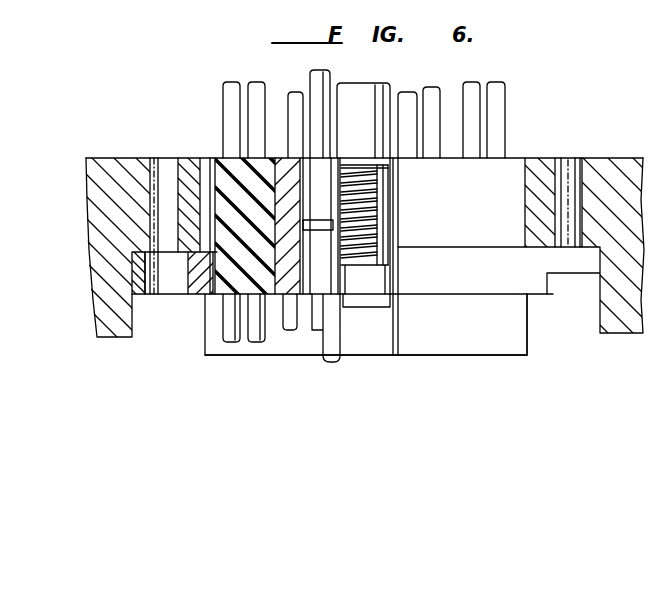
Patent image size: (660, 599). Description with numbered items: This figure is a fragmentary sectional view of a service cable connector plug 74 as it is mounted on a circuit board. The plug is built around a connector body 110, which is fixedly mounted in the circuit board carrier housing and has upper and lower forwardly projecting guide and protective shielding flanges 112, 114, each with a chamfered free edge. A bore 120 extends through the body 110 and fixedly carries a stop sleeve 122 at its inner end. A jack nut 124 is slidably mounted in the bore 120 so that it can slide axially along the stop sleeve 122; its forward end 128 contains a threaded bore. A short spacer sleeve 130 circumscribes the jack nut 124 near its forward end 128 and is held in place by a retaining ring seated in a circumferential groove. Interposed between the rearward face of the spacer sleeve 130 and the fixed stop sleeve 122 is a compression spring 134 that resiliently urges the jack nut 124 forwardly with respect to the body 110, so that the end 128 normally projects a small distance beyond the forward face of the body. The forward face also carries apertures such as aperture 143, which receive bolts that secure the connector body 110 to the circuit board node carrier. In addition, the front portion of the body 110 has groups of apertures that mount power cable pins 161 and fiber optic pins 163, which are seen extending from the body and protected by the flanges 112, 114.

The connector assembly 74 is at (458, 367).
The body 110 is at (522, 157).
The upper guide and protective shielding flange 112 is at (527, 347).
The lower guide and protective shielding flange 114 is at (283, 356).
The bore 120 is at (398, 200).
The stop sleeve 122 is at (398, 178).
The jack nut 124 is at (388, 86).
The forward end of jack nut 128 is at (377, 308).
The spacer sleeve 130 is at (390, 280).
The compression spring 134 is at (398, 229).
The aperture 143 is at (145, 274).
The power cable pins 161 is at (253, 342).
The fiber optic pins 163 is at (333, 366).